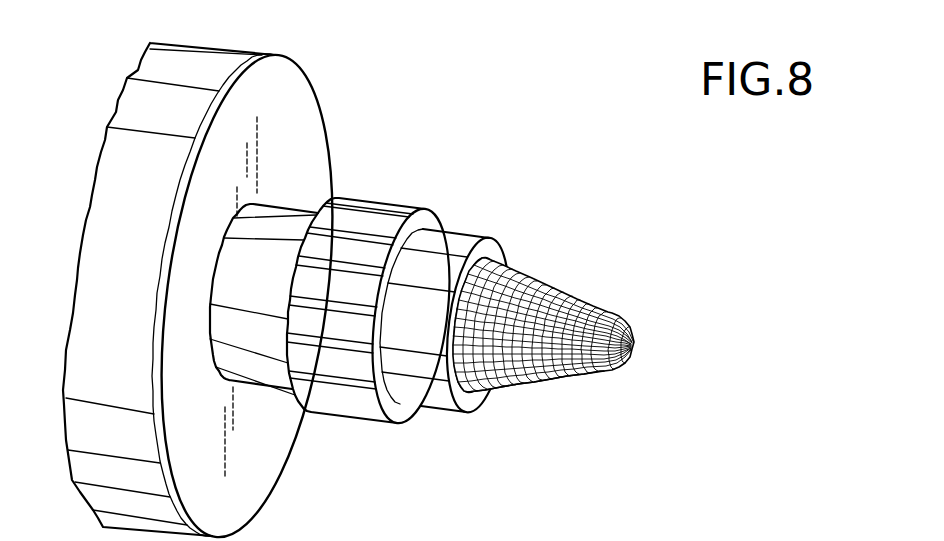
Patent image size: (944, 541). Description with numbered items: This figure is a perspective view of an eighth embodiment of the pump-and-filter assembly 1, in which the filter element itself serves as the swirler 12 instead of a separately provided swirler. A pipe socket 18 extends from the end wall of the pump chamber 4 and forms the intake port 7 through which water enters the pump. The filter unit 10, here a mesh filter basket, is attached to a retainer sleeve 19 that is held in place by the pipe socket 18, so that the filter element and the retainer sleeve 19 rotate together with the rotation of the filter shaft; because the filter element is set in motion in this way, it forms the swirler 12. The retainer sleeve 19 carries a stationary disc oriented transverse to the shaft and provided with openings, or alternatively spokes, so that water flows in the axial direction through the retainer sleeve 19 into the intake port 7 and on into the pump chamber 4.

The pump-and-filter assembly 1 is at (284, 500).
The pump chamber 4 is at (300, 152).
The intake port 7 is at (437, 212).
The filter unit 10 is at (545, 315).
The swirler 12 is at (556, 391).
The pipe socket 18 is at (372, 218).
The retainer sleeve 19 is at (468, 250).